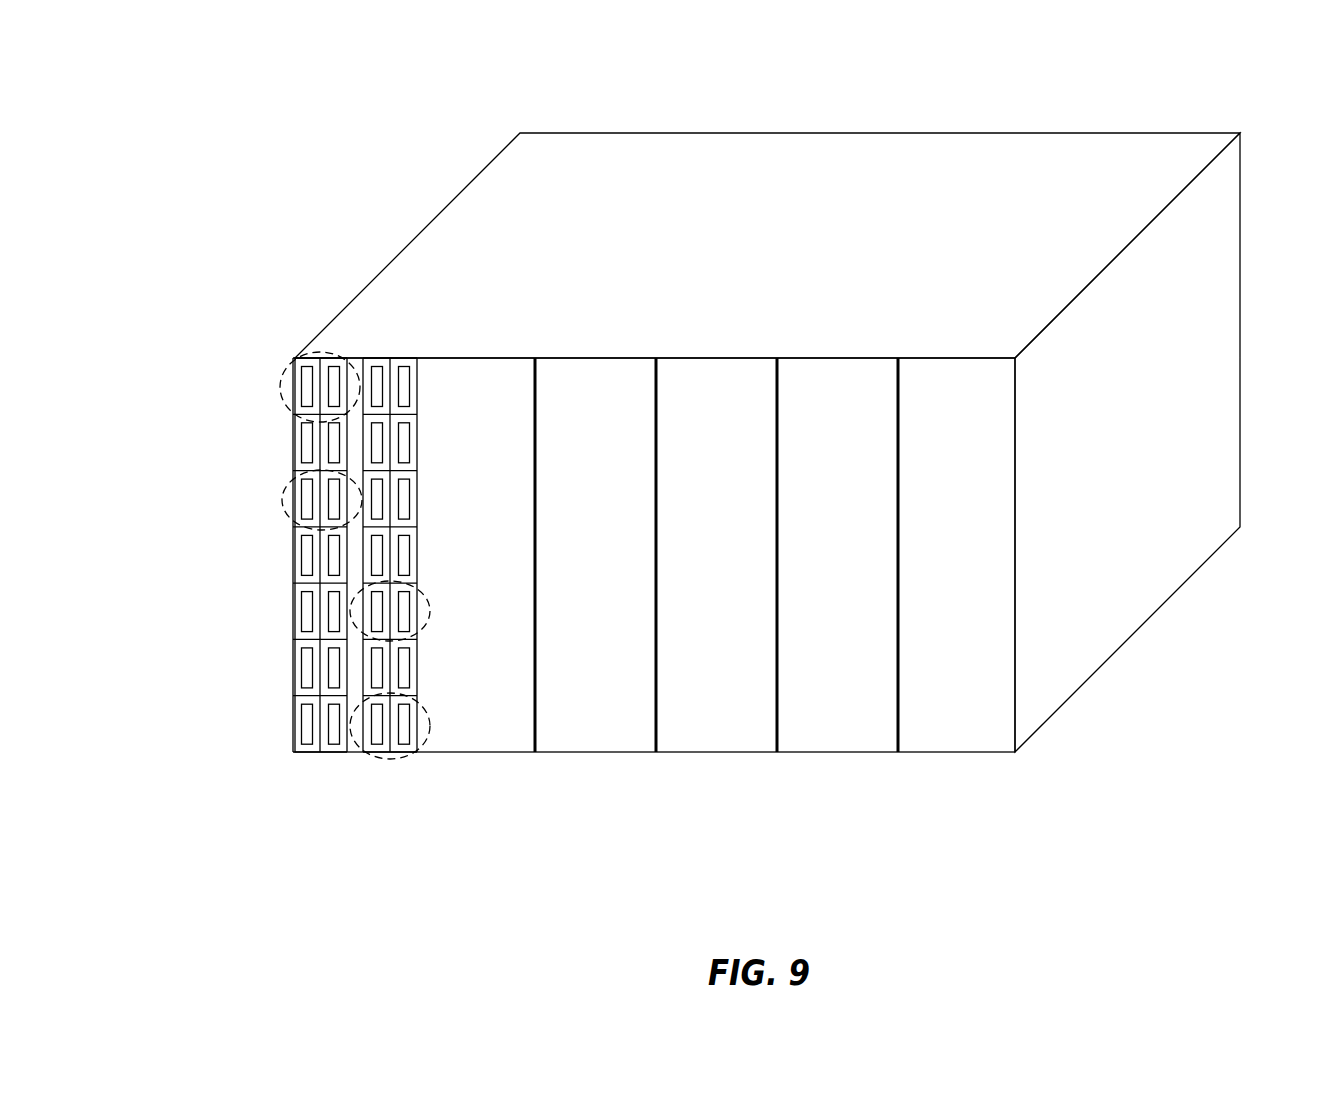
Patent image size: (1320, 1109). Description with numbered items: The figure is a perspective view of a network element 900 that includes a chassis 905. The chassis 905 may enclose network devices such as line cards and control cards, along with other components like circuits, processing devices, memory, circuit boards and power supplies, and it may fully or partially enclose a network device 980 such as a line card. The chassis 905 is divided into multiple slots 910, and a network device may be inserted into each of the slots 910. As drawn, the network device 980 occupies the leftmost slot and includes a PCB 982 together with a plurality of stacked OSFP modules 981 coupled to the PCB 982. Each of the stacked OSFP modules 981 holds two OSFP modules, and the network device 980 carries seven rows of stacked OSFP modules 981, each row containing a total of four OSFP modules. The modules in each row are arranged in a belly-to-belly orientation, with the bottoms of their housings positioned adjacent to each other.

The network element 900 is at (274, 136).
The chassis 905 is at (827, 158).
The slots 910 is at (535, 773).
The network device 980 is at (349, 346).
The stacked OSFP modules 981 is at (280, 380).
The PCB 982 is at (355, 356).